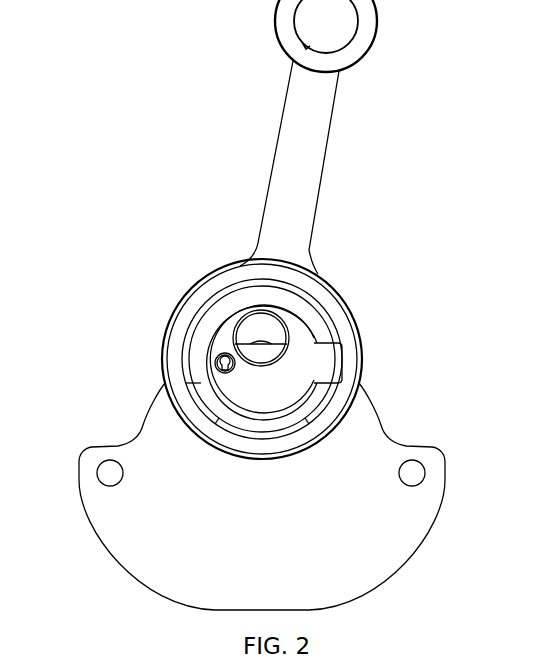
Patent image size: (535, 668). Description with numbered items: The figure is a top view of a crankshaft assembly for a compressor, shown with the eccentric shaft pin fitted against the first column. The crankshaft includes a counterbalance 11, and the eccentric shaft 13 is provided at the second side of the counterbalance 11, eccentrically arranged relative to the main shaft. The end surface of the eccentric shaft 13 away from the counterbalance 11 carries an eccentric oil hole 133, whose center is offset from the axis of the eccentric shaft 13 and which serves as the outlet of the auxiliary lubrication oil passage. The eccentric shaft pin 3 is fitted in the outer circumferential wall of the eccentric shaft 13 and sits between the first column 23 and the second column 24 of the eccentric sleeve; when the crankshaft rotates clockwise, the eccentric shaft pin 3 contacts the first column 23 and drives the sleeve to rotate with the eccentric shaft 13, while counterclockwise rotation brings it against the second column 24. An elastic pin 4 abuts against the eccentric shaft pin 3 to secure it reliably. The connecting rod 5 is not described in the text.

The connecting rod 5 is at (307, 155).
The eccentric shaft pin 3 is at (330, 357).
The eccentric shaft 13 is at (298, 352).
The eccentric oil hole 133 is at (263, 335).
The first column 23 is at (317, 402).
The second column 24 is at (197, 387).
The elastic pin 4 is at (215, 362).
The counterbalance 11 is at (365, 482).